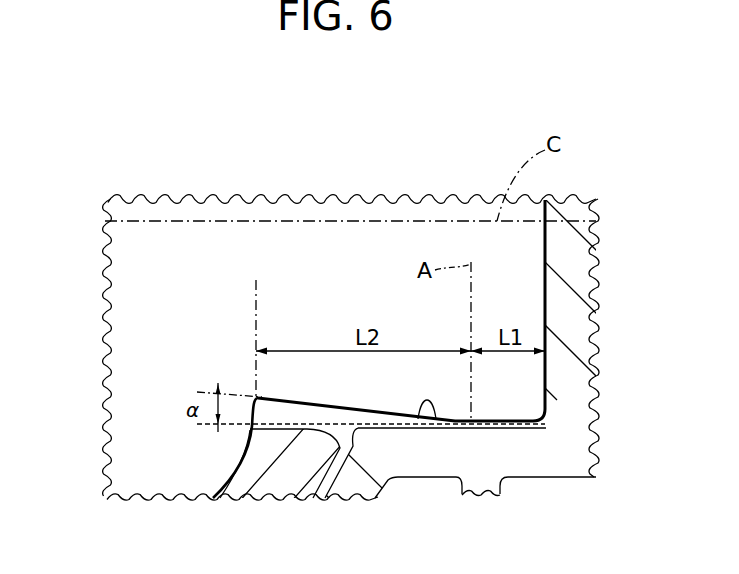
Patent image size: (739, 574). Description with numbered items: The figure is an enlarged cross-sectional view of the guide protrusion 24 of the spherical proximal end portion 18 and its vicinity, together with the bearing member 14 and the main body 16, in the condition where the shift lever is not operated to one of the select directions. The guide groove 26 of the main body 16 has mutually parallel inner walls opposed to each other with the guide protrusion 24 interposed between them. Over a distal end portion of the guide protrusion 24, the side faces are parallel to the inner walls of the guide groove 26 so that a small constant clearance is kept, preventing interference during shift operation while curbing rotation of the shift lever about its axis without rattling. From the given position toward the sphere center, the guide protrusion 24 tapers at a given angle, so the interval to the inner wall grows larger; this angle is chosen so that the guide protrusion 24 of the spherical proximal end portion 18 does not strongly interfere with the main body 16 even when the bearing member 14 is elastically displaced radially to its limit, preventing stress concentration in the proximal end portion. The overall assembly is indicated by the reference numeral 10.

The transistor shielding assembly 10 is at (260, 104).
The bearing member 14 is at (286, 518).
The main body 16 is at (535, 492).
The spherical proximal end portion 18 is at (163, 297).
The guide protrusion 24 is at (492, 308).
The guide groove 26 is at (435, 404).